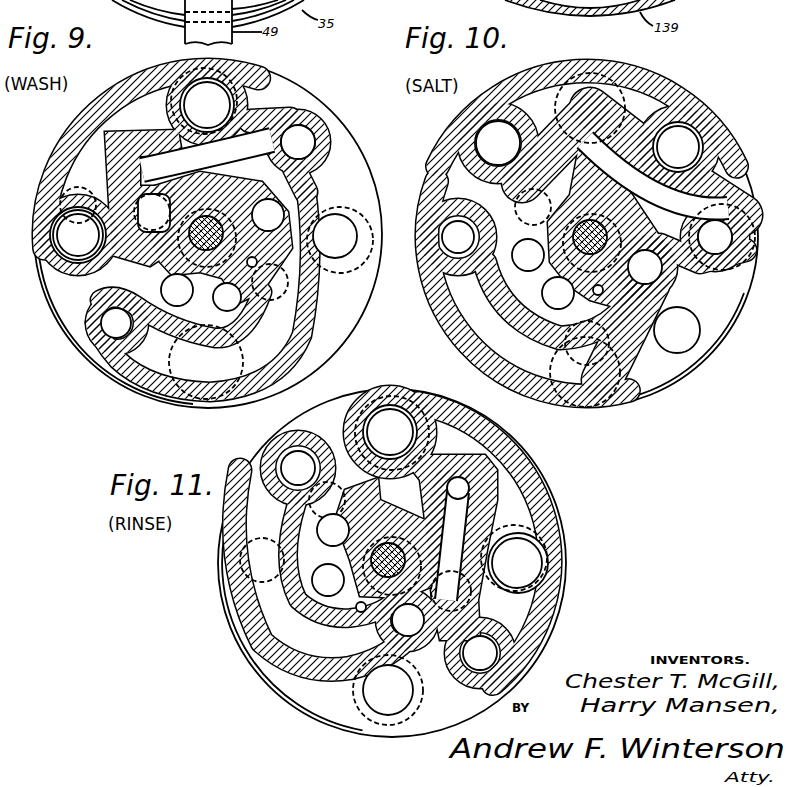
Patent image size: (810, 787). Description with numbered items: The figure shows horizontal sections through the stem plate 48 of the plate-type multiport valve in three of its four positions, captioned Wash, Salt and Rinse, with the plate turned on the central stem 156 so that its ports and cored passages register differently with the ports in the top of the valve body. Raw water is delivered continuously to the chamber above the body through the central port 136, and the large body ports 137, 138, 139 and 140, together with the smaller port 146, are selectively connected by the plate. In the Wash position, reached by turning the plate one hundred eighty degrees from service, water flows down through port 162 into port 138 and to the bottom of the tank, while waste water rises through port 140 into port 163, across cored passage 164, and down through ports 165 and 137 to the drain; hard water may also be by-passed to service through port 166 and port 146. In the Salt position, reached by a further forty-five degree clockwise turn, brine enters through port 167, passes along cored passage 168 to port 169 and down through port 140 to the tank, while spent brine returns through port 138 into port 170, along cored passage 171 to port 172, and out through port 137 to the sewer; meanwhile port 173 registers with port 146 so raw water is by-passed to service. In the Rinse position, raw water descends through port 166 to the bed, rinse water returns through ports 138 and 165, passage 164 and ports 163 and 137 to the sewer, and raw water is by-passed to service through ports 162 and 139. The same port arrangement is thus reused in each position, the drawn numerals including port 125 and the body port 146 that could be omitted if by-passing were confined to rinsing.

In FIG. 9, the stem plate 48 is at (352, 167).
In FIG. 10, the stem plate 48 is at (742, 161).
In FIG. 11, the stem plate 48 is at (555, 548).
In FIG. 9, the port 125 is at (262, 300).
In FIG. 10, the port 125 is at (670, 278).
In FIG. 11, the port 125 is at (422, 553).
In FIG. 9, the central port 136 is at (180, 264).
In FIG. 10, the central port 136 is at (604, 205).
In FIG. 11, the central port 136 is at (418, 510).
In FIG. 9, the port 137 is at (245, 100).
In FIG. 10, the port 137 is at (652, 74).
In FIG. 11, the port 137 is at (392, 433).
In FIG. 9, the port 138 is at (360, 228).
In FIG. 10, the port 138 is at (742, 183).
In FIG. 11, the port 138 is at (558, 520).
In FIG. 9, the port 139 is at (240, 356).
In FIG. 10, the port 139 is at (620, 378).
In FIG. 11, the port 139 is at (424, 700).
In FIG. 9, the port 140 is at (62, 190).
In FIG. 10, the port 140 is at (567, 187).
In FIG. 11, the port 140 is at (362, 494).
In FIG. 9, the smaller port 146 is at (224, 303).
In FIG. 10, the smaller port 146 is at (548, 293).
In FIG. 11, the smaller port 146 is at (334, 626).
In FIG. 9, the central stem 156 is at (222, 192).
In FIG. 10, the central stem 156 is at (604, 293).
In FIG. 11, the central stem 156 is at (357, 553).
In FIG. 9, the port 162 is at (357, 212).
In FIG. 10, the port 162 is at (700, 338).
In FIG. 11, the port 162 is at (386, 697).
In FIG. 9, the port 163 is at (45, 226).
In FIG. 10, the port 163 is at (457, 127).
In FIG. 9, the cored passage 164 is at (123, 105).
In FIG. 10, the cored passage 164 is at (543, 78).
In FIG. 11, the cored passage 164 is at (510, 473).
In FIG. 9, the port 165 is at (250, 76).
In FIG. 10, the port 165 is at (722, 120).
In FIG. 11, the port 165 is at (552, 586).
In FIG. 9, the port 166 is at (163, 288).
In FIG. 10, the port 166 is at (524, 240).
In FIG. 11, the port 166 is at (338, 515).
In FIG. 9, the port 167 is at (302, 200).
In FIG. 10, the port 167 is at (684, 297).
In FIG. 11, the port 167 is at (395, 625).
In FIG. 9, the cored passage 168 is at (259, 365).
In FIG. 10, the cored passage 168 is at (542, 365).
In FIG. 11, the cored passage 168 is at (262, 618).
In FIG. 9, the port 169 is at (122, 332).
In FIG. 10, the port 169 is at (458, 218).
In FIG. 11, the port 169 is at (286, 480).
In FIG. 9, the port 170 is at (285, 148).
In FIG. 10, the port 170 is at (750, 258).
In FIG. 11, the port 170 is at (500, 652).
In FIG. 9, the cored passage 171 is at (243, 175).
In FIG. 10, the cored passage 171 is at (664, 217).
In FIG. 11, the cored passage 171 is at (477, 629).
In FIG. 9, the port 172 is at (140, 163).
In FIG. 10, the port 172 is at (592, 145).
In FIG. 11, the port 172 is at (457, 500).
In FIG. 9, the port 173 is at (255, 318).
In FIG. 10, the port 173 is at (536, 327).
In FIG. 11, the port 173 is at (284, 565).